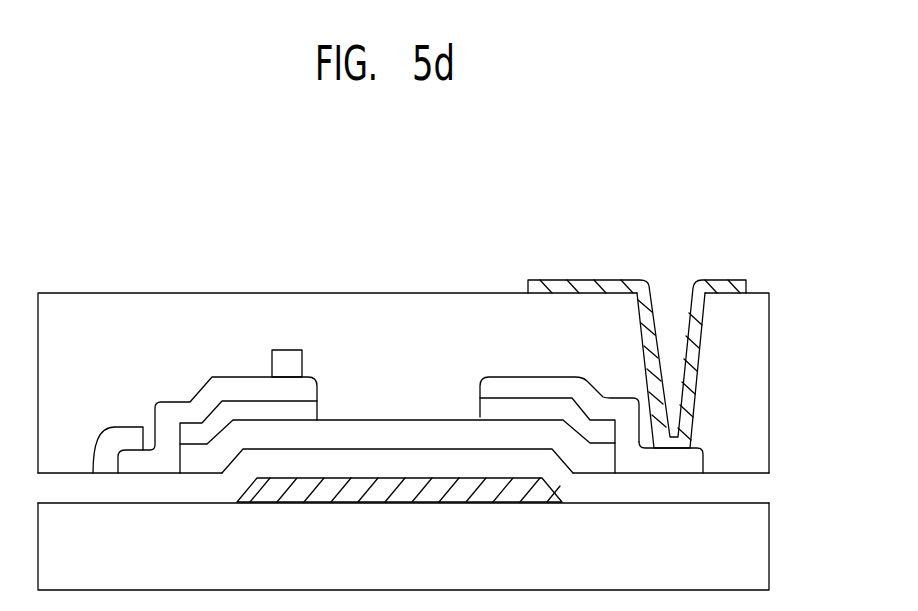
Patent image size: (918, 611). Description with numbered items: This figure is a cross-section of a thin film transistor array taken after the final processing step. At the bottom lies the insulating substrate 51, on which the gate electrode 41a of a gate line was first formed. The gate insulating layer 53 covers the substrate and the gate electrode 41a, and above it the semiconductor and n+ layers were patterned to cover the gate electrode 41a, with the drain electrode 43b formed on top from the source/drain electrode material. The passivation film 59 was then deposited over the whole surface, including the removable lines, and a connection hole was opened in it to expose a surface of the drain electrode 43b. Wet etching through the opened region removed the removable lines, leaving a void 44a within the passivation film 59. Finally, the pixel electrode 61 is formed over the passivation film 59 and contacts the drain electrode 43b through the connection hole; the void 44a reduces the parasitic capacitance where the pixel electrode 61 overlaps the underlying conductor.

The insulating substrate 51 is at (752, 553).
The gate insulating layer 53 is at (752, 489).
The gate electrode 41a is at (402, 483).
The drain electrode 43b is at (687, 459).
The void 44a is at (113, 440).
The passivation film 59 is at (752, 397).
The pixel electrode 61 is at (735, 288).